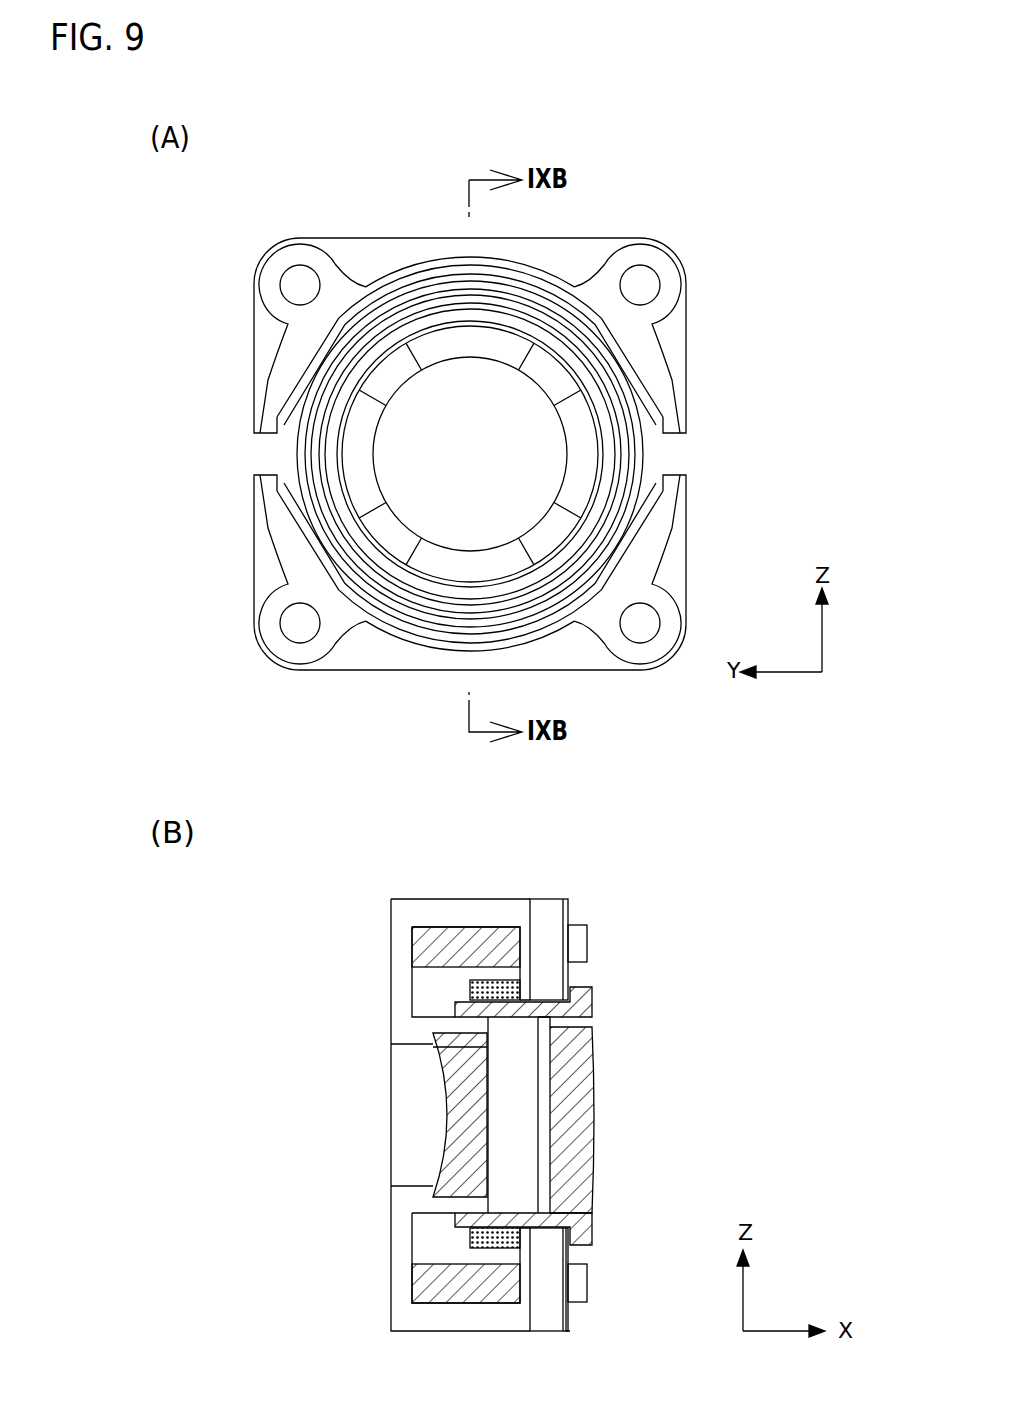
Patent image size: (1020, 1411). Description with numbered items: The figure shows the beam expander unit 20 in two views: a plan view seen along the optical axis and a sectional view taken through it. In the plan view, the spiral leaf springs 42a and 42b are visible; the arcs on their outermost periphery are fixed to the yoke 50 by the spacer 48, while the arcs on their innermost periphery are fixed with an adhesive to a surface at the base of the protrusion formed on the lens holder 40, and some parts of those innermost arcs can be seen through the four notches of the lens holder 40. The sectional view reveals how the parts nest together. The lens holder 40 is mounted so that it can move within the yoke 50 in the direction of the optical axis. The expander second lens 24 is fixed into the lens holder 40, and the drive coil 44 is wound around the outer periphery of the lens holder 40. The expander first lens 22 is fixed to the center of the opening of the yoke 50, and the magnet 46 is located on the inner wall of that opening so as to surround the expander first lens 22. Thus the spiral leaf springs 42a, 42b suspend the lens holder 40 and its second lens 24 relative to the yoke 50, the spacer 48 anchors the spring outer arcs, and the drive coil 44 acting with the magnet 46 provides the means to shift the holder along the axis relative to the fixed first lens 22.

The beam expander unit 20 is at (272, 176).
The expander first lens 22 is at (440, 1137).
The expander second lens 24 is at (405, 445).
The lens holder 40 is at (580, 461).
The spiral leaf spring 42a is at (675, 535).
The spiral leaf spring 42b is at (665, 356).
The drive coil 44 is at (470, 1240).
The magnet 46 is at (472, 927).
The spacer 48 is at (638, 285).
The yoke 50 is at (365, 237).